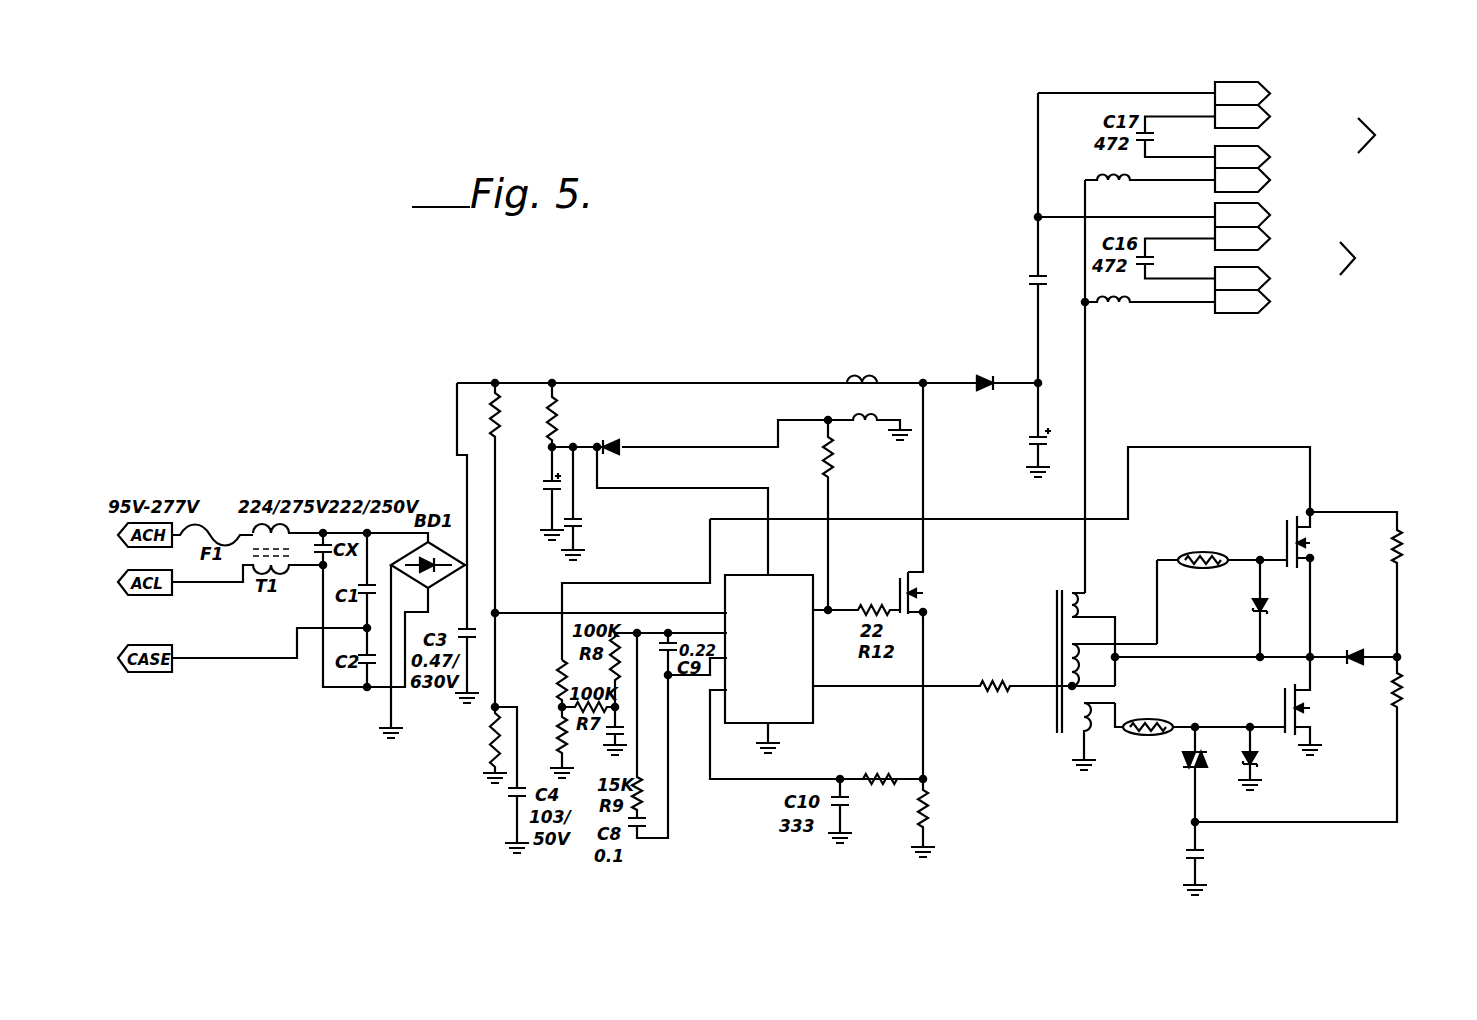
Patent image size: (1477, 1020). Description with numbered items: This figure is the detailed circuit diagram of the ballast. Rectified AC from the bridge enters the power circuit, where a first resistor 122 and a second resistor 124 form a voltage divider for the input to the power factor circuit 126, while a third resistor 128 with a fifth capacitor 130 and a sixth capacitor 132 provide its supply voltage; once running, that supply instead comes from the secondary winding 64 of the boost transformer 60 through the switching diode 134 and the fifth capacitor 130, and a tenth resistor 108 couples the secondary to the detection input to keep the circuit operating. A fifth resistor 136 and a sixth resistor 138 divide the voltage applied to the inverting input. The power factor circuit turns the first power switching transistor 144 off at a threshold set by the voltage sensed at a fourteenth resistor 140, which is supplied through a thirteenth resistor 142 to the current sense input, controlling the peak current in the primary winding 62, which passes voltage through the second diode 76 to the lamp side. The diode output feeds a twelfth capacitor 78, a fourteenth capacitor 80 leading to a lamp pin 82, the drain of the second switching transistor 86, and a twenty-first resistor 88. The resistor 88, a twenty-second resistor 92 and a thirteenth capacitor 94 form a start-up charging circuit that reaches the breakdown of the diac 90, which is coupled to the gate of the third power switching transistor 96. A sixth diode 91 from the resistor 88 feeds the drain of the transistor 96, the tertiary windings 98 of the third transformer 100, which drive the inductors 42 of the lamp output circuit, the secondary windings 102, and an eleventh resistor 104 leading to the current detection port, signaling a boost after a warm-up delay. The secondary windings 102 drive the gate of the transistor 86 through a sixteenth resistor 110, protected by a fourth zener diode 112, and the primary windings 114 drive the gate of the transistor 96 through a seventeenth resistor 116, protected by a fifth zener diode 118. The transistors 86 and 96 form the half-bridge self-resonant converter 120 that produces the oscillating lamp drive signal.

The inductors 42 is at (1108, 182).
The transformer T2 60 is at (856, 399).
The primary winding 62 is at (872, 381).
The secondary winding 64 is at (844, 415).
The diode D2 76 is at (973, 377).
The capacitor C12 78 is at (1046, 443).
The capacitor C14 80 is at (1048, 257).
The lamp pin 82 is at (1223, 82).
The switching transistor Q2 86 is at (1285, 550).
The resistor R21 88 is at (1394, 548).
The diac D3 90 is at (1199, 771).
The diode D6 91 is at (1362, 649).
The resistor R22 92 is at (1401, 679).
The capacitor C13 94 is at (1206, 854).
The power switching transistor Q3 96 is at (1318, 715).
The tertiary windings 98 is at (1084, 608).
The transformer T3 100 is at (1048, 636).
The secondary windings 102 is at (1114, 665).
The resistor R11 104 is at (995, 683).
The resistor R10 108 is at (835, 467).
The resistor R16 110 is at (1175, 632).
The zener diode D4 112 is at (1256, 619).
The primary windings 114 is at (1082, 733).
The resistor R17 116 is at (1148, 737).
The zener diode D5 118 is at (1244, 756).
The half-bridge self-resonant converter 120 is at (1202, 553).
The resistor R1 122 is at (500, 426).
The resistor R2 124 is at (494, 750).
The power factor circuit U1 126 is at (768, 726).
The resistor R3 128 is at (556, 400).
The capacitor C5 130 is at (548, 484).
The capacitor C6 132 is at (578, 517).
The switching diode D1 134 is at (622, 443).
The resistor R5 136 is at (560, 666).
The resistor R6 138 is at (562, 750).
The resistor R14 140 is at (923, 828).
The resistor R13 142 is at (883, 775).
The power switching transistor Q1 144 is at (925, 589).